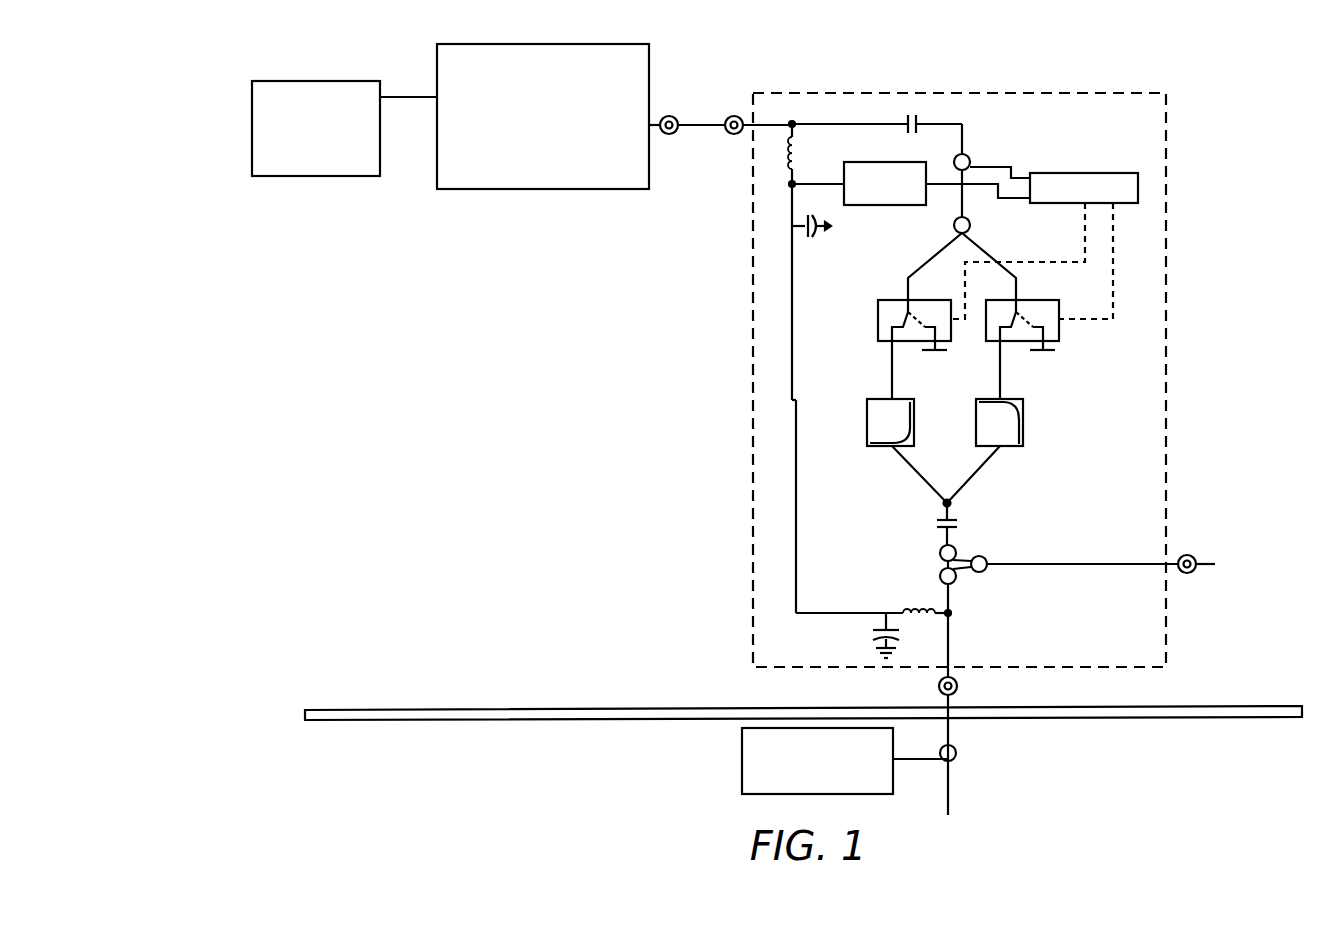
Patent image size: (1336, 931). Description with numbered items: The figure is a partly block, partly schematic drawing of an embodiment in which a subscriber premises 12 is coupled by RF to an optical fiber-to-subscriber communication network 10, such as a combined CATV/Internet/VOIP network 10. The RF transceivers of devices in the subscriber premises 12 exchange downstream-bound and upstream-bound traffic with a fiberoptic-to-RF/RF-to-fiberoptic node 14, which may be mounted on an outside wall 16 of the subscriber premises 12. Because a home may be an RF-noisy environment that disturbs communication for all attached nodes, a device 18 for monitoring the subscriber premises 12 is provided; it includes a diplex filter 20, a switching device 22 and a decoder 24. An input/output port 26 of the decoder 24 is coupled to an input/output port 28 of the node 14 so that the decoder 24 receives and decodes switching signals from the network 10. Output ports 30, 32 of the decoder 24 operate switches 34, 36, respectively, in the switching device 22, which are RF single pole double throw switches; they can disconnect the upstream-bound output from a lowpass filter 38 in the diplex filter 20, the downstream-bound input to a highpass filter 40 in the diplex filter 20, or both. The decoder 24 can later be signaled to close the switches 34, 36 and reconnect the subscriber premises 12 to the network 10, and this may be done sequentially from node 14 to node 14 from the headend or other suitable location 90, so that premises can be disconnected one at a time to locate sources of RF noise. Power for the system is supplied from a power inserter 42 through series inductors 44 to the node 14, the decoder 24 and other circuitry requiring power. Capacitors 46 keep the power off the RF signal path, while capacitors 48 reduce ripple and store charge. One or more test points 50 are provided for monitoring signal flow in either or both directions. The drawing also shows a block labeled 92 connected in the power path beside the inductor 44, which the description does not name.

The optical fiber-to-subscriber communication network 10 is at (412, 86).
The subscriber premises 12 is at (569, 688).
The fiberoptic-to-RF/RF-to-fiberoptic node 14 is at (477, 44).
The outside wall 16 is at (497, 708).
The device for monitoring a subscriber premises 18 is at (1195, 108).
The diplex filter 20 is at (1068, 372).
The switching device 22 is at (878, 280).
The decoder 24 is at (1084, 168).
The input/output port of the decoder 26 is at (734, 116).
The input/output port of the node 28 is at (669, 116).
The output port of the decoder 30 is at (1085, 205).
The output port of the decoder 32 is at (1113, 205).
The switch 34 is at (878, 318).
The switch 36 is at (1042, 300).
The lowpass filter 38 is at (867, 423).
The highpass filter 40 is at (1023, 423).
The power inserter 42 is at (742, 762).
The series inductor 44 is at (785, 150).
The capacitor 46 is at (912, 114).
The capacitor 48 is at (805, 228).
The test point 50 is at (1190, 554).
The headend or other suitable location 90 is at (303, 178).
The sensor 92 is at (857, 160).